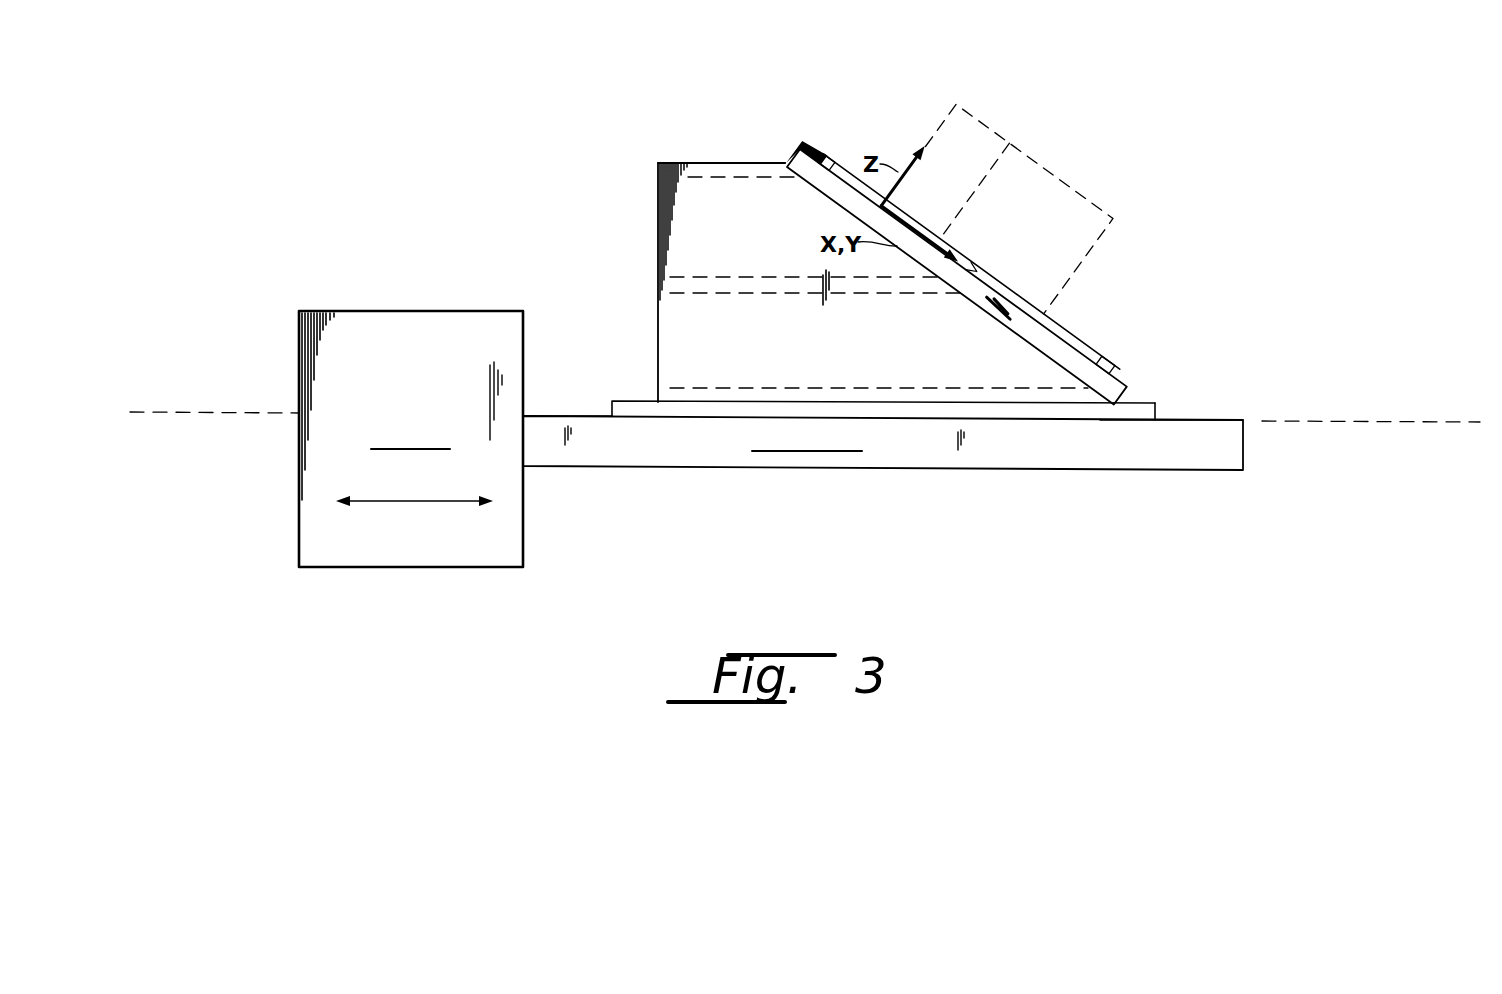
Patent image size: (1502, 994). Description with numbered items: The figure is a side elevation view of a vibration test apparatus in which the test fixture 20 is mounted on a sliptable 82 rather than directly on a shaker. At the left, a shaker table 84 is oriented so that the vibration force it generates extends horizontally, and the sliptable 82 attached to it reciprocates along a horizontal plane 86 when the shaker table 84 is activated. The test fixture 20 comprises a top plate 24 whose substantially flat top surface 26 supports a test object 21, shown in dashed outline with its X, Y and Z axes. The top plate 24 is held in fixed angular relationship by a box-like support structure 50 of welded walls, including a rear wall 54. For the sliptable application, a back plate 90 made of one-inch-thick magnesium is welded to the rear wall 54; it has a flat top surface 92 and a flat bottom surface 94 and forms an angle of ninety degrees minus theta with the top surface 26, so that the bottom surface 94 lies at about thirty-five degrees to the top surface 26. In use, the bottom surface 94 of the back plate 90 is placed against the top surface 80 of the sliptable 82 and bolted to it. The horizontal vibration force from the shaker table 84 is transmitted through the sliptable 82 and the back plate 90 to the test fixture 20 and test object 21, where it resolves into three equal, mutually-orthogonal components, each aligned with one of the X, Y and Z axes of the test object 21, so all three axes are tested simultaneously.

The test fixture 20 is at (630, 239).
The test object 21 is at (1068, 187).
The top plate 24 is at (798, 150).
The top surface 26 is at (1122, 378).
The support structure 50 is at (690, 150).
The rear wall 54 is at (955, 392).
The top surface 80 is at (583, 412).
The sliptable 82 is at (697, 450).
The shaker table 84 is at (320, 568).
The horizontal plane 86 is at (1386, 421).
The back plate 90 is at (1160, 408).
The top surface 92 is at (627, 404).
The bottom surface 94 is at (1150, 421).